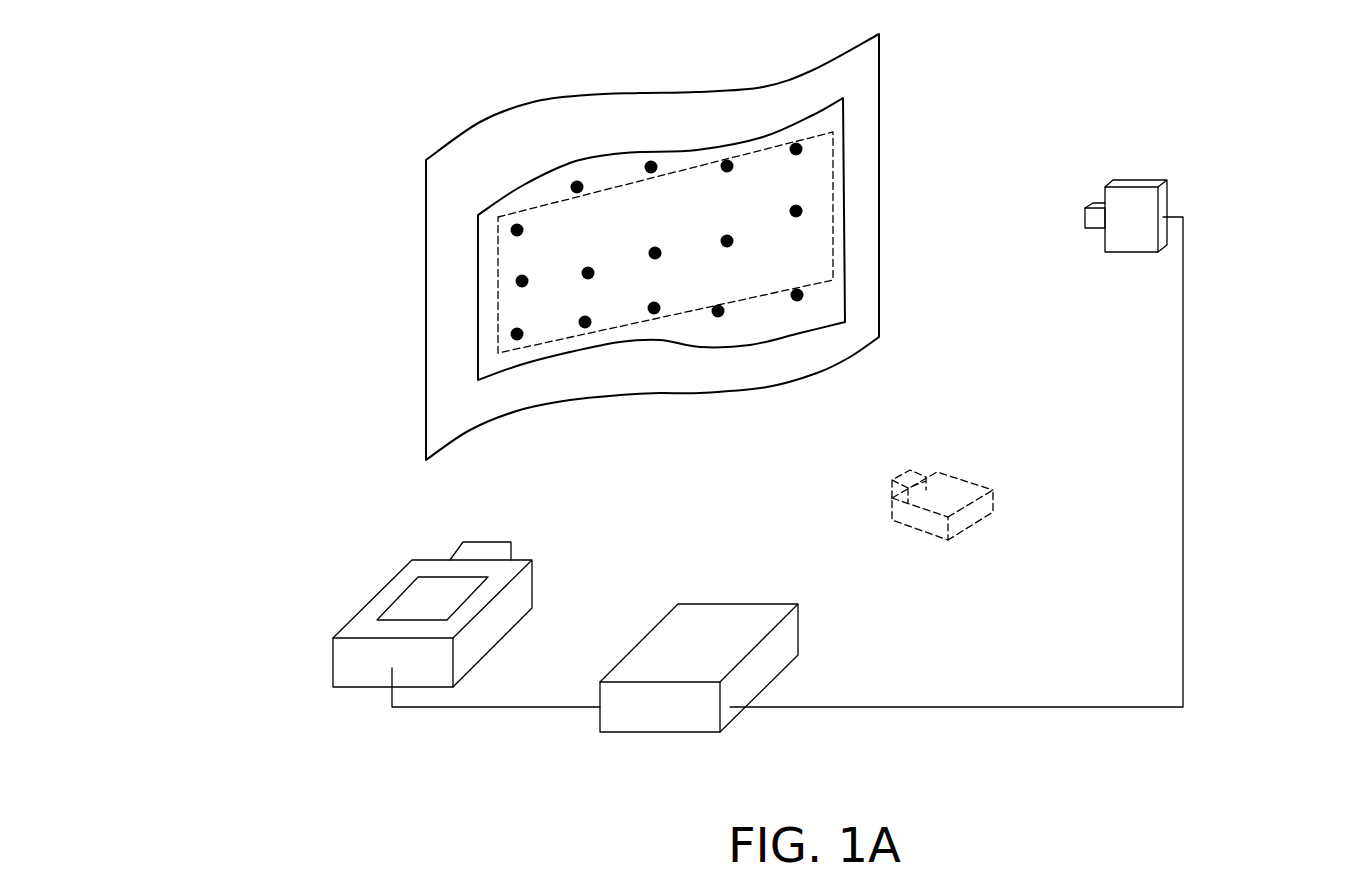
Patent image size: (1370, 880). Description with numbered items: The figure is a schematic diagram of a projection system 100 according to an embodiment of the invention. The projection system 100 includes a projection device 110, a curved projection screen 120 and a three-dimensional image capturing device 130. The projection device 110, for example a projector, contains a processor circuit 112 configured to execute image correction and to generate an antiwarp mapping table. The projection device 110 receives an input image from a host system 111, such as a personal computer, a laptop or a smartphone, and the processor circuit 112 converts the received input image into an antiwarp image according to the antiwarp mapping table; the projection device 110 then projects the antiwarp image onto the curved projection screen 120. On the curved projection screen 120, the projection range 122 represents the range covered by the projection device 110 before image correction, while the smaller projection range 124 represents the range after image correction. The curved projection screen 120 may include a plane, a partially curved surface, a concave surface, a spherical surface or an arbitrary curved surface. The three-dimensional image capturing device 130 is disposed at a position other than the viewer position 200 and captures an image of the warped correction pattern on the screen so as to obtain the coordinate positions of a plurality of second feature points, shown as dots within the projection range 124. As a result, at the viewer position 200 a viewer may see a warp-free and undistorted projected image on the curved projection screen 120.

The projection system 100 is at (1337, 803).
The projection device 110 is at (416, 624).
The host system 111 is at (677, 613).
The processor circuit 112 is at (400, 597).
The curved projection screen 120 is at (650, 93).
The projection range 122 is at (478, 298).
The projection range after image correction 124 is at (835, 205).
The 3D image capturing device 130 is at (1130, 252).
The viewer position 200 is at (963, 478).